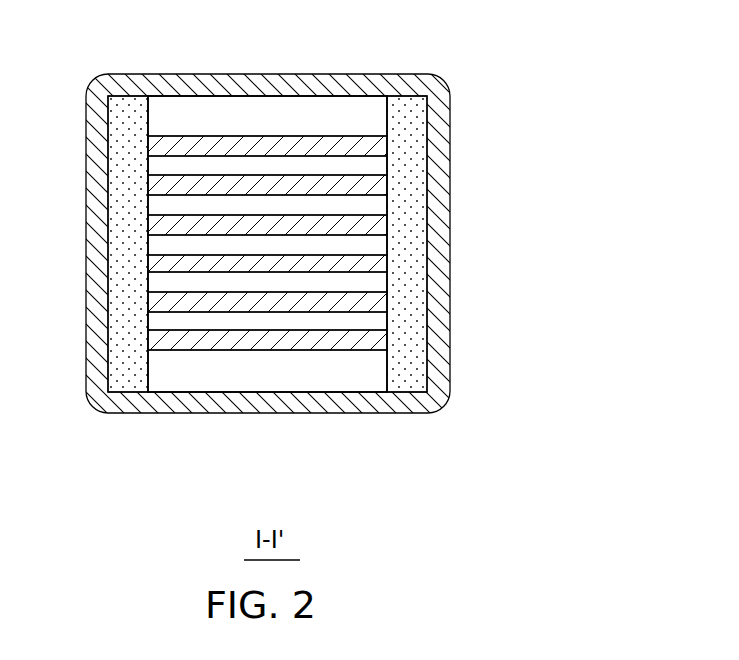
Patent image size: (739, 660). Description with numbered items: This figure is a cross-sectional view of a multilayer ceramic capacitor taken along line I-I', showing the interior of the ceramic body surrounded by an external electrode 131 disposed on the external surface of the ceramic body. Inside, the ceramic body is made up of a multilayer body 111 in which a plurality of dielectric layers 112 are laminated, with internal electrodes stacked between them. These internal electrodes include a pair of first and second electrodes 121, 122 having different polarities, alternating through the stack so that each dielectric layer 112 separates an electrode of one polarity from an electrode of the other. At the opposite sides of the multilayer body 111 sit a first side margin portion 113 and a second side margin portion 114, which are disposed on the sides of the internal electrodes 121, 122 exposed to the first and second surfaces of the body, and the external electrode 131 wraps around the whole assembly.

The external electrode 131 is at (352, 82).
The multilayer body 111 is at (270, 369).
The dielectric layer 112 is at (375, 168).
The first internal electrode 121 is at (376, 144).
The second internal electrode 122 is at (377, 186).
The first side margin portion 113 is at (133, 367).
The second side margin portion 114 is at (408, 363).